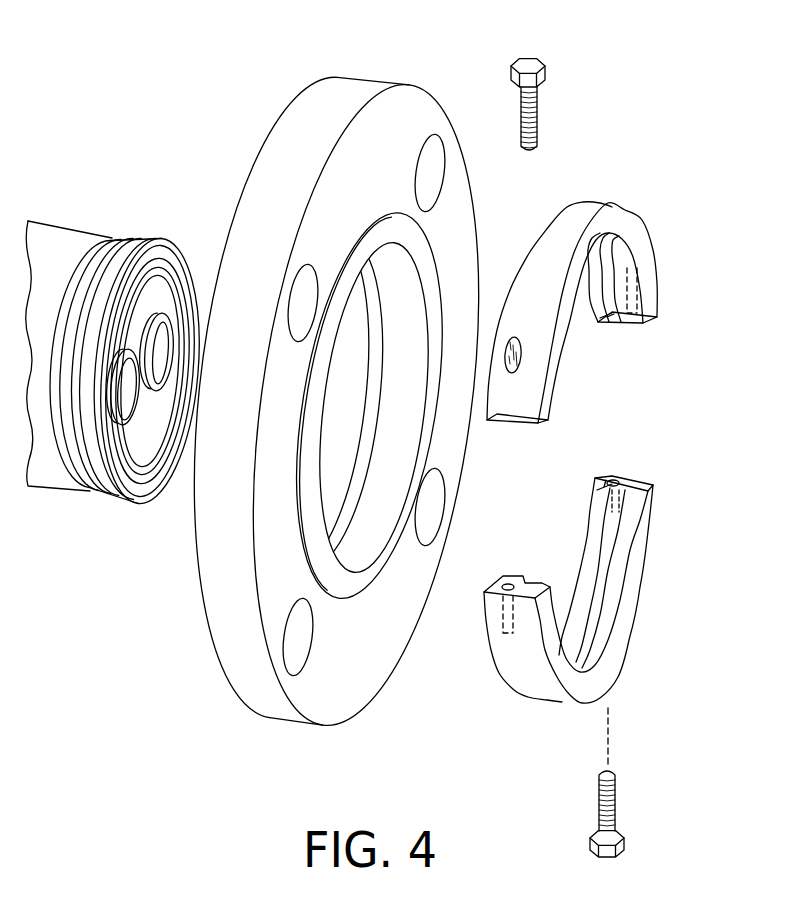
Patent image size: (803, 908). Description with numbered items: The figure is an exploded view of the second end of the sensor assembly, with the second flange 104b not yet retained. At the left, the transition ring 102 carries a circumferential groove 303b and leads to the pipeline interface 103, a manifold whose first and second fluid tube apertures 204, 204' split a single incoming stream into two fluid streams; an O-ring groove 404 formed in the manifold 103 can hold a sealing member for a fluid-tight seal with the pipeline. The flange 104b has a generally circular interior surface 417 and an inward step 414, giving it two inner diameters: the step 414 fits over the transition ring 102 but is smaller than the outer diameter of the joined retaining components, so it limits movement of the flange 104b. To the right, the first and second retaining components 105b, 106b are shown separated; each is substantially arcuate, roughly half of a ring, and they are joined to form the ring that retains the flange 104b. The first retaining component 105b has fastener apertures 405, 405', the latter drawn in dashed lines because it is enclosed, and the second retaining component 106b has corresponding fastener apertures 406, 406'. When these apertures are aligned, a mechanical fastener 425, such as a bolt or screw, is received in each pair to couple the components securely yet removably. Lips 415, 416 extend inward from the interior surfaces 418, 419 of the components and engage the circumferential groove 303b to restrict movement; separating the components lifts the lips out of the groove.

The transition ring 102 is at (72, 230).
The circumferential groove 303b is at (117, 247).
The O-ring groove 404 is at (162, 256).
The pipeline interface 103 is at (139, 452).
The first fluid tube aperture 204 is at (195, 352).
The second fluid tube aperture 204' is at (97, 454).
The second flange 104b is at (425, 98).
The circular interior surface 417 is at (385, 525).
The step 414 is at (337, 523).
The first retaining component 105b is at (650, 252).
The interior surface 418 is at (623, 253).
The fastener aperture 405 is at (530, 317).
The fastener aperture 405' is at (653, 320).
The lip 415 is at (598, 323).
The second retaining component 106b is at (655, 520).
The interior surface 419 is at (630, 567).
The lip 416 is at (597, 502).
The fastener aperture 406 is at (507, 568).
The fastener aperture 406' is at (637, 467).
The mechanical fastener 425 is at (540, 65).